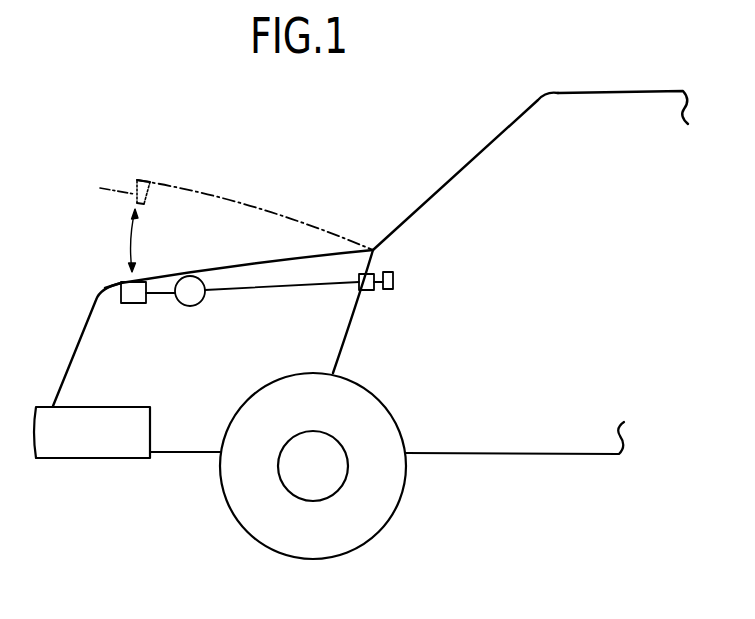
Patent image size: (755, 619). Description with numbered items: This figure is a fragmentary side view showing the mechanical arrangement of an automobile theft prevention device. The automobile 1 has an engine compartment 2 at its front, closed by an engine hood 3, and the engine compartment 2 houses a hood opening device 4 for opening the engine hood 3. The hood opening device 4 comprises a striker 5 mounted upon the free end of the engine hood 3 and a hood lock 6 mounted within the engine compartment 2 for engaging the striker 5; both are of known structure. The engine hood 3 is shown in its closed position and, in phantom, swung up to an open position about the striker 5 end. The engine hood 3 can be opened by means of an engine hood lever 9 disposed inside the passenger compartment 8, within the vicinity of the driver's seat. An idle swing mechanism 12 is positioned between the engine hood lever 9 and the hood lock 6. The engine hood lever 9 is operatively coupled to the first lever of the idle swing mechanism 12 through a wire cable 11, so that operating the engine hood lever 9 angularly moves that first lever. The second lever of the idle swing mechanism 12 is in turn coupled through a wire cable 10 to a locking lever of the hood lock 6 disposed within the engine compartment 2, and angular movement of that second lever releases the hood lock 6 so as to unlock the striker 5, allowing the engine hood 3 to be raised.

The automobile 1 is at (422, 155).
The engine compartment 2 is at (67, 355).
The engine hood 3 is at (250, 198).
The hood opening device 4 is at (313, 303).
The striker 5 is at (100, 188).
The hood lock 6 is at (126, 281).
The passenger compartment 8 is at (567, 108).
The engine hood lever 9 is at (393, 288).
The wire cable 10 is at (163, 295).
The wire cable 11 is at (281, 289).
The idle swing mechanism 12 is at (190, 306).